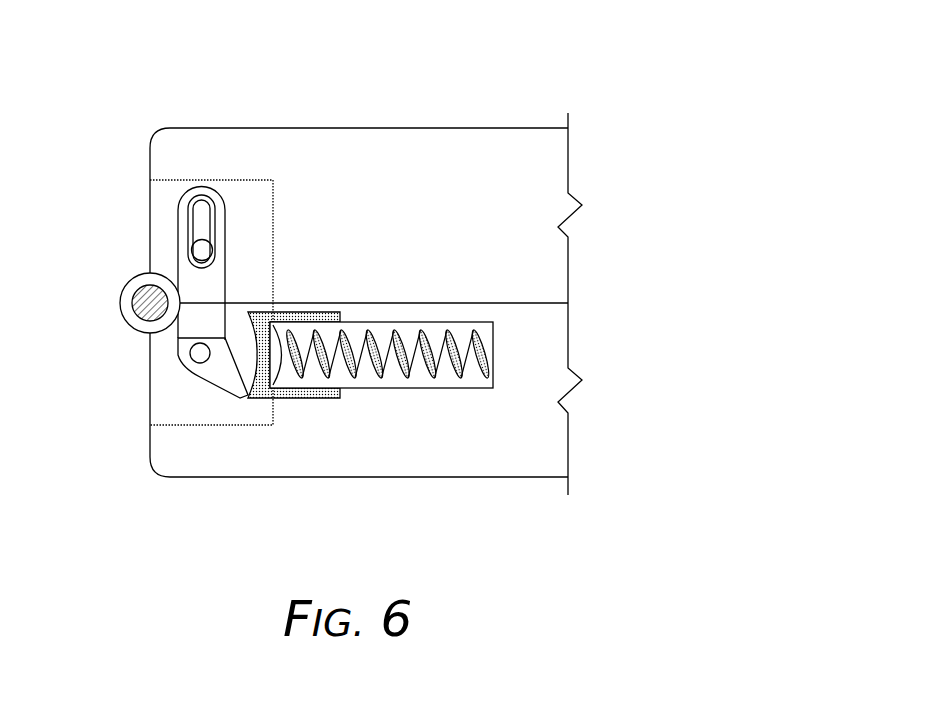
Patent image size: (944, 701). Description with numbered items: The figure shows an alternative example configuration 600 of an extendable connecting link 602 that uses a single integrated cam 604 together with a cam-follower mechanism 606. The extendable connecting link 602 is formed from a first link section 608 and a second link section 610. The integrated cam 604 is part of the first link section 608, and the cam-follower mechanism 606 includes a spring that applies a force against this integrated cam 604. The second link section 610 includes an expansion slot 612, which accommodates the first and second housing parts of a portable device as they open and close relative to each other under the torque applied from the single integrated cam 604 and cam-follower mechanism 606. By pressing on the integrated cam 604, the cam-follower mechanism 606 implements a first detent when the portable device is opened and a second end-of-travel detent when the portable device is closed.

The alternative example configuration 600 is at (507, 88).
The extendable connecting link 602 is at (180, 395).
The integrated cam 604 is at (150, 423).
The cam-follower mechanism 606 is at (417, 388).
The first link section 608 is at (178, 333).
The second link section 610 is at (143, 242).
The expansion slot 612 is at (178, 282).